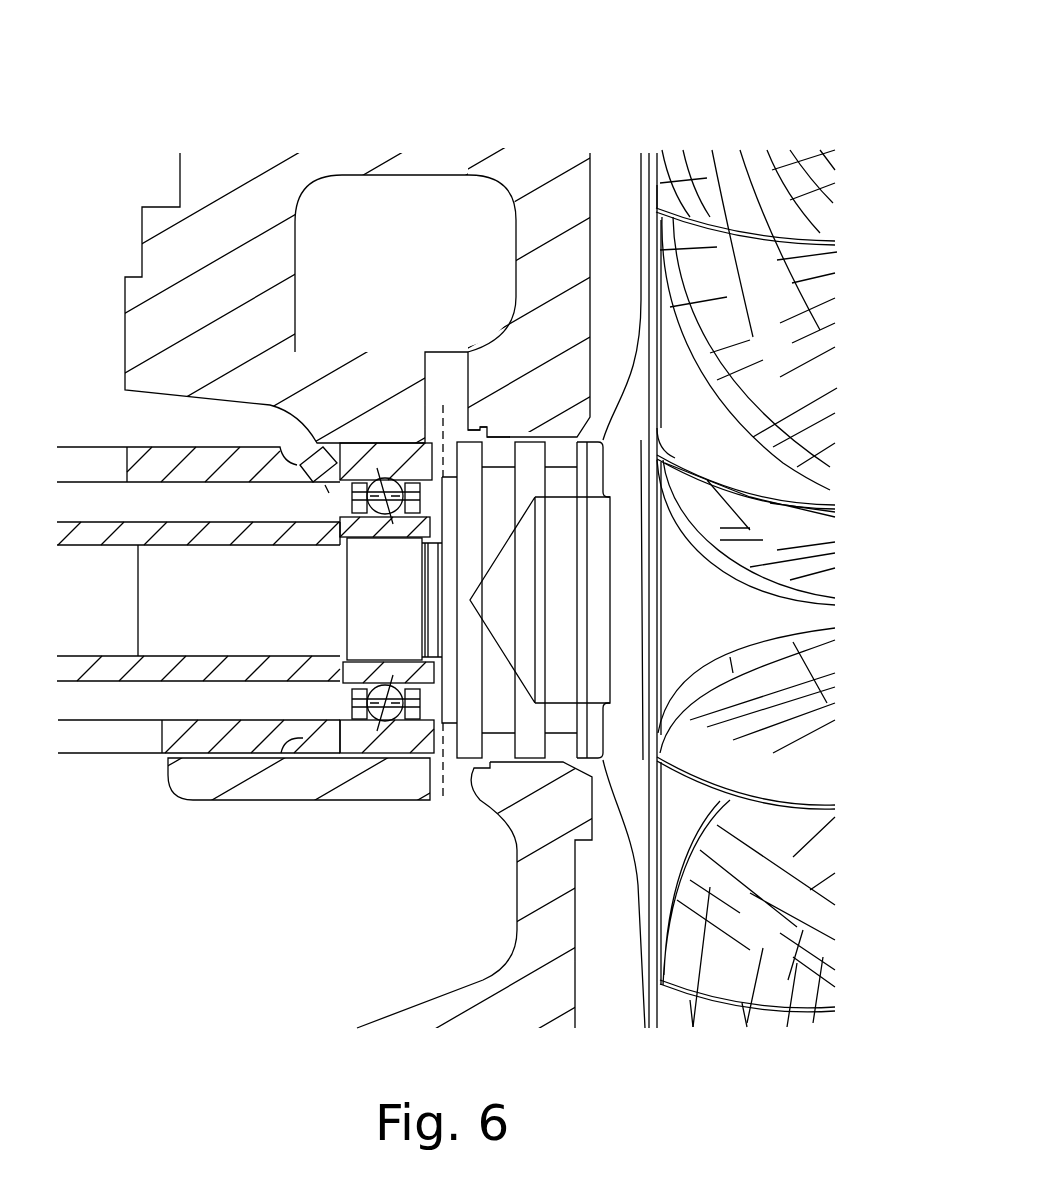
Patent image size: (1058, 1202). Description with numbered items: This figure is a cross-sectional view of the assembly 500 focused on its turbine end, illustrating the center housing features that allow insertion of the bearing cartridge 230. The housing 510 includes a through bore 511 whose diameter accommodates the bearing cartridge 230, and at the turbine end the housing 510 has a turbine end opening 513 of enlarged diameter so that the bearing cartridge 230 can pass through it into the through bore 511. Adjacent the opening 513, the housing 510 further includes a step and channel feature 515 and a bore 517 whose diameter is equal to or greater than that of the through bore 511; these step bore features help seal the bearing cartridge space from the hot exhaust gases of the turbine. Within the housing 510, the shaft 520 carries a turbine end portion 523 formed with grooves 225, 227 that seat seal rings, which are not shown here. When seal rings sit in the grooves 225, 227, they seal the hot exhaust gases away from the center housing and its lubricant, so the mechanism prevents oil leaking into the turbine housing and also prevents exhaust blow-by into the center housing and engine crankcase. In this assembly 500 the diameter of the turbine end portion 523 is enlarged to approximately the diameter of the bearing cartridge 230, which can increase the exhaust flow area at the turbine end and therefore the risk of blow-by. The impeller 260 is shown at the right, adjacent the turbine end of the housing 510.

The assembly 500 is at (628, 52).
The impeller 260 is at (782, 110).
The housing 510 is at (233, 307).
The through bore 511 is at (310, 442).
The turbine end opening 513 is at (467, 430).
The step and channel feature 515 is at (480, 428).
The bore 517 is at (502, 430).
The shaft 520 is at (294, 610).
The turbine end portion 523 is at (546, 611).
The groove 225 is at (492, 733).
The groove 227 is at (558, 733).
The bearing cartridge 230 is at (157, 766).